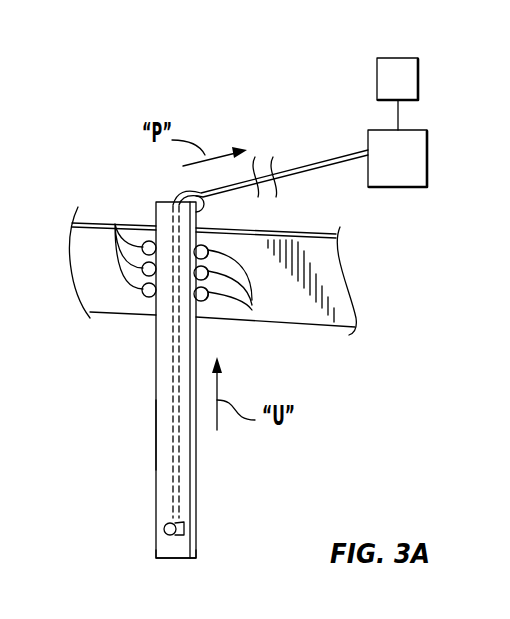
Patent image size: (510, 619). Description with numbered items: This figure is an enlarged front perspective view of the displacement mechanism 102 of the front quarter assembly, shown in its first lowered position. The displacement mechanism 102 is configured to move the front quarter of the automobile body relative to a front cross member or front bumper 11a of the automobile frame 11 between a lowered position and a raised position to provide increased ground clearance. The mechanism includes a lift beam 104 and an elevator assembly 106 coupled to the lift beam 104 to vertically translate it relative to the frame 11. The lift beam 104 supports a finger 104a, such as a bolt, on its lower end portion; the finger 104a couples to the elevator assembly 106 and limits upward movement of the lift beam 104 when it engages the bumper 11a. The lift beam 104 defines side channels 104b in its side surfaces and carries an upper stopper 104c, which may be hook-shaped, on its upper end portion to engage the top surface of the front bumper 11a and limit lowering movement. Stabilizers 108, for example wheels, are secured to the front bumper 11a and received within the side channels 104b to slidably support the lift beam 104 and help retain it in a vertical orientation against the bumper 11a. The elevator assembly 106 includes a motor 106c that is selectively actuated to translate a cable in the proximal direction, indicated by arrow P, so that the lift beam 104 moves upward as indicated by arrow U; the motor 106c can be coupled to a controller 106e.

The frame 11 is at (95, 240).
The front bumper 11a is at (345, 312).
The displacement mechanism 102 is at (138, 447).
The lift beam 104 is at (185, 456).
The finger 104a is at (183, 521).
The side channels 104b is at (150, 551).
The upper stopper 104c is at (205, 225).
The elevator assembly 106 is at (302, 161).
The motor 106c is at (390, 178).
The controller 106e is at (398, 62).
The stabilizers 108 is at (115, 224).